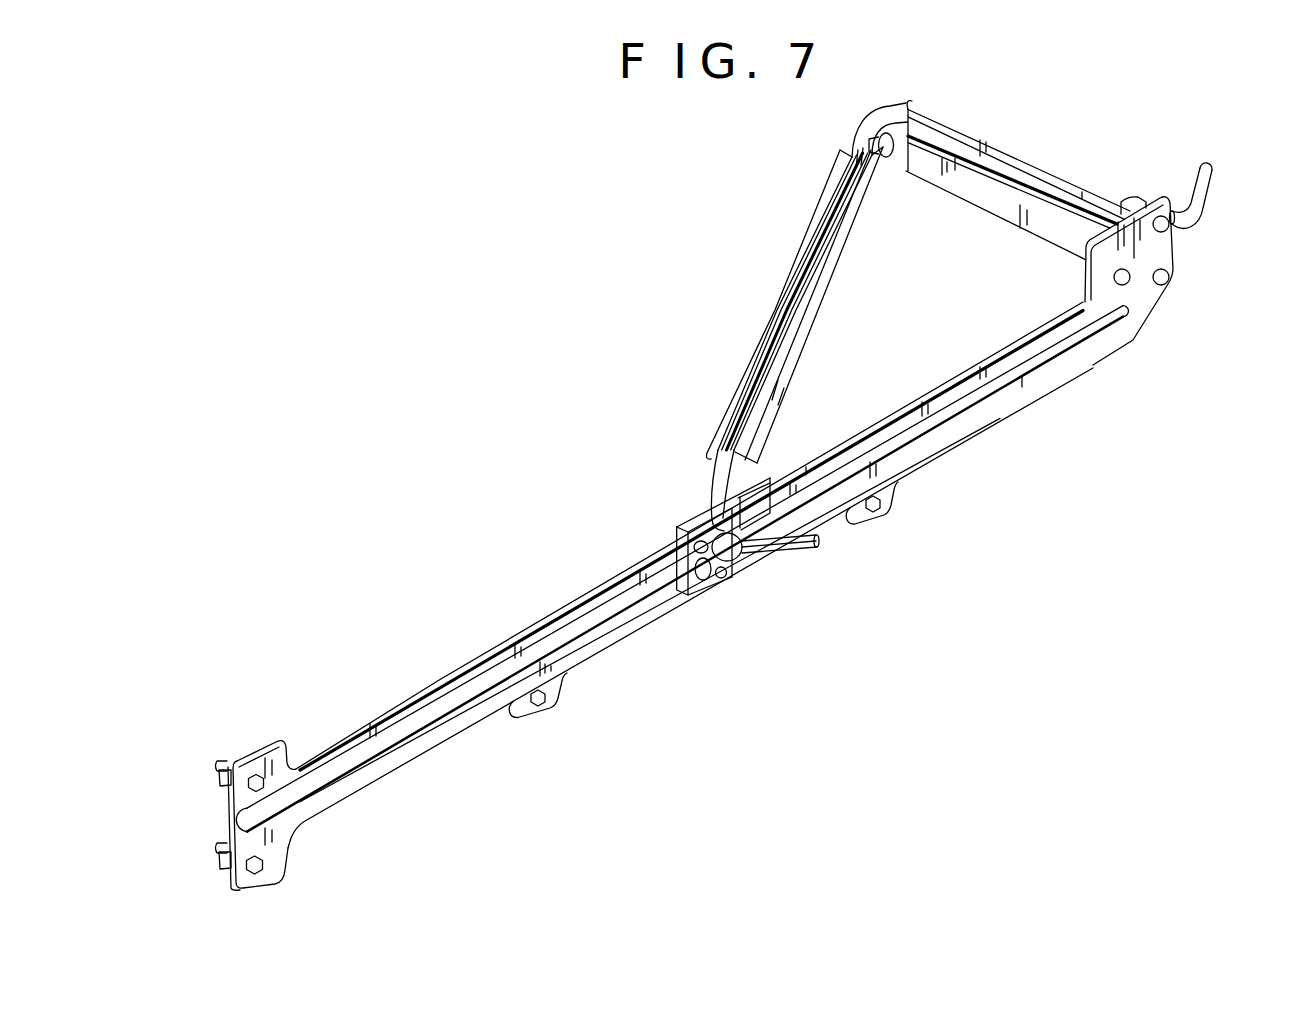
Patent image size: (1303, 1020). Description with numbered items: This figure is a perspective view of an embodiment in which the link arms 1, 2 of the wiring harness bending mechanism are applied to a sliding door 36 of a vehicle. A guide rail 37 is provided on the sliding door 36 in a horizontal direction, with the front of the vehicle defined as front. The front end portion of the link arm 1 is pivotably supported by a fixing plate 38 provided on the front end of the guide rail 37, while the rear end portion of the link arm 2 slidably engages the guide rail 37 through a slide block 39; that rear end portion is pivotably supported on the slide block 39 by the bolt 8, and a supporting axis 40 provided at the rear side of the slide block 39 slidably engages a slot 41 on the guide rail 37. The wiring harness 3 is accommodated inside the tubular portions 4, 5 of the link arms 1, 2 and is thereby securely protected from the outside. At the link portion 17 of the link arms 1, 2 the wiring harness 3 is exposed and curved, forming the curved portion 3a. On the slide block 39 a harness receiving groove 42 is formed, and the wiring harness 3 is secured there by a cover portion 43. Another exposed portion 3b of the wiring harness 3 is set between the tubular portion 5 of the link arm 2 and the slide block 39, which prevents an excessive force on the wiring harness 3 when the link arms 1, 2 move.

The link arm 1 is at (1068, 178).
The link arm 2 is at (757, 313).
The wiring harness 3 is at (1207, 211).
The exposed curved portion of wiring harness 3a is at (855, 128).
The exposed portion of wiring harness 3b is at (710, 474).
The tubular portion 4 is at (1003, 172).
The tubular portion 5 is at (824, 244).
The bolt 8 is at (768, 552).
The link portion 17 is at (900, 154).
The sliding door 36 is at (597, 688).
The guide rail 37 is at (557, 607).
The fixing plate 38 is at (1163, 253).
The slide block 39 is at (682, 519).
The supporting axis 40 is at (715, 568).
The slot 41 is at (620, 603).
The harness receiving groove 42 is at (724, 502).
The cover portion 43 is at (697, 591).